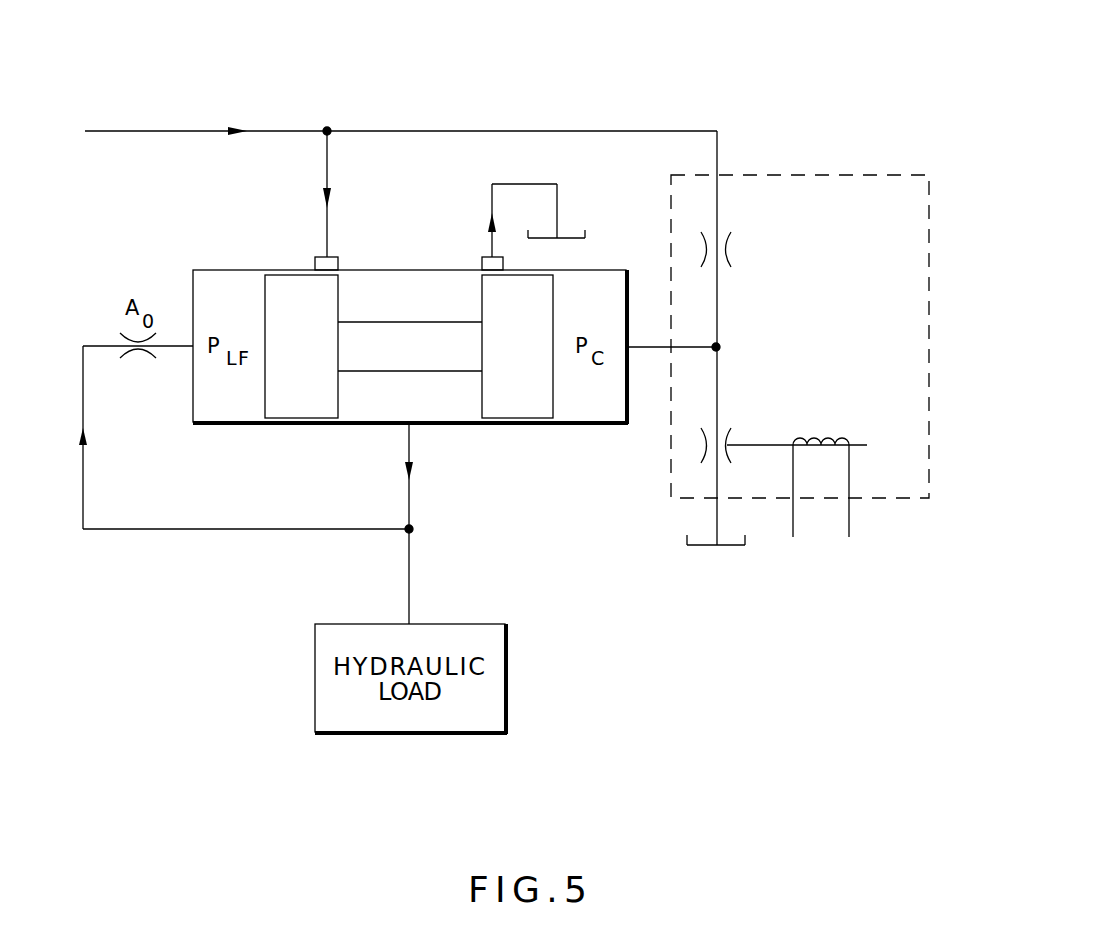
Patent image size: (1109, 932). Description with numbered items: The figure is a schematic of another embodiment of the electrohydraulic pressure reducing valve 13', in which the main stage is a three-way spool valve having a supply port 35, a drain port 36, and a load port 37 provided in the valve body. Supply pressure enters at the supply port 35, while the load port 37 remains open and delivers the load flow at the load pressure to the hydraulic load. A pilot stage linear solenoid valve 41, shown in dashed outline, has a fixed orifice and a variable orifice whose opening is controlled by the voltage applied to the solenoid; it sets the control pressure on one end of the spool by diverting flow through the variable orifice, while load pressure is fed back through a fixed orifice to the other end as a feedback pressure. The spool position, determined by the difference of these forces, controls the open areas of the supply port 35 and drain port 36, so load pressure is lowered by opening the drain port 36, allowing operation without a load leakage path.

The pressure reducing valve 13' is at (415, 276).
The supply port 35 is at (315, 264).
The drain port 36 is at (482, 260).
The load port 37 is at (415, 425).
The linear solenoid valve 41 is at (915, 255).